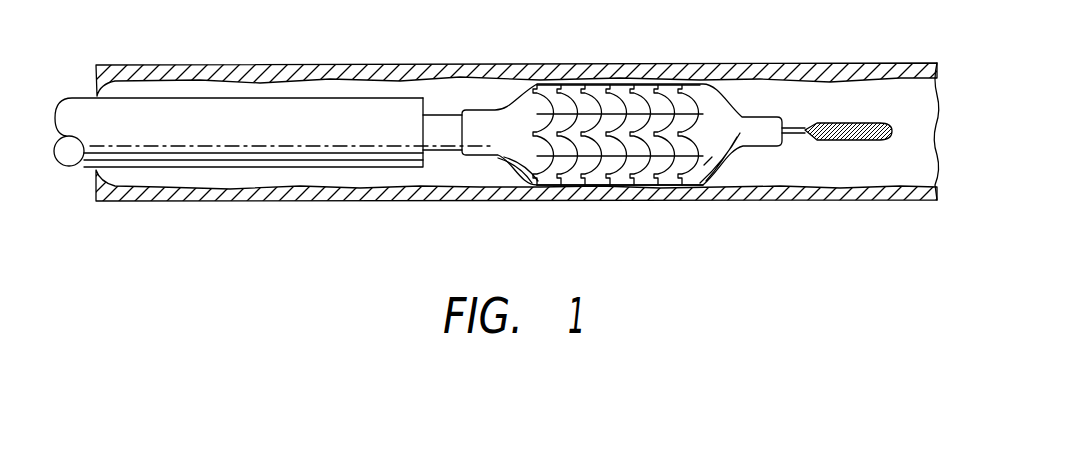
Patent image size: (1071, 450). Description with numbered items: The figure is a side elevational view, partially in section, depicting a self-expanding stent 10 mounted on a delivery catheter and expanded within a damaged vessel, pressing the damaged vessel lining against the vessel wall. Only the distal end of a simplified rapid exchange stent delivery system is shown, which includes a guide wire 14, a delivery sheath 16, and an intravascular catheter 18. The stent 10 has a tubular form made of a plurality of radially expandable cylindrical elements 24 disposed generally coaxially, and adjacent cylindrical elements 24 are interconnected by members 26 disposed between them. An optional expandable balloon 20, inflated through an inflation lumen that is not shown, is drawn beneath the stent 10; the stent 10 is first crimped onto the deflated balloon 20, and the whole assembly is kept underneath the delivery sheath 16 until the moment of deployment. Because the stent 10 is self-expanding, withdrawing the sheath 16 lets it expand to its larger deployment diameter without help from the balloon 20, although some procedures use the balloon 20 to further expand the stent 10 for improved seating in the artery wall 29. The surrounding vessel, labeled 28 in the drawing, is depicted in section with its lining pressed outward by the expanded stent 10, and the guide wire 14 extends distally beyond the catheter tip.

The stent 10 is at (710, 116).
The guide wire 14 is at (792, 127).
The delivery sheath 16 is at (154, 157).
The intravascular catheter 18 is at (444, 118).
The expandable balloon 20 is at (513, 163).
The cylindrical elements 24 is at (606, 76).
The interconnecting members 26 is at (618, 158).
The body lumen wall 28 is at (846, 70).
The artery wall 29 is at (874, 187).